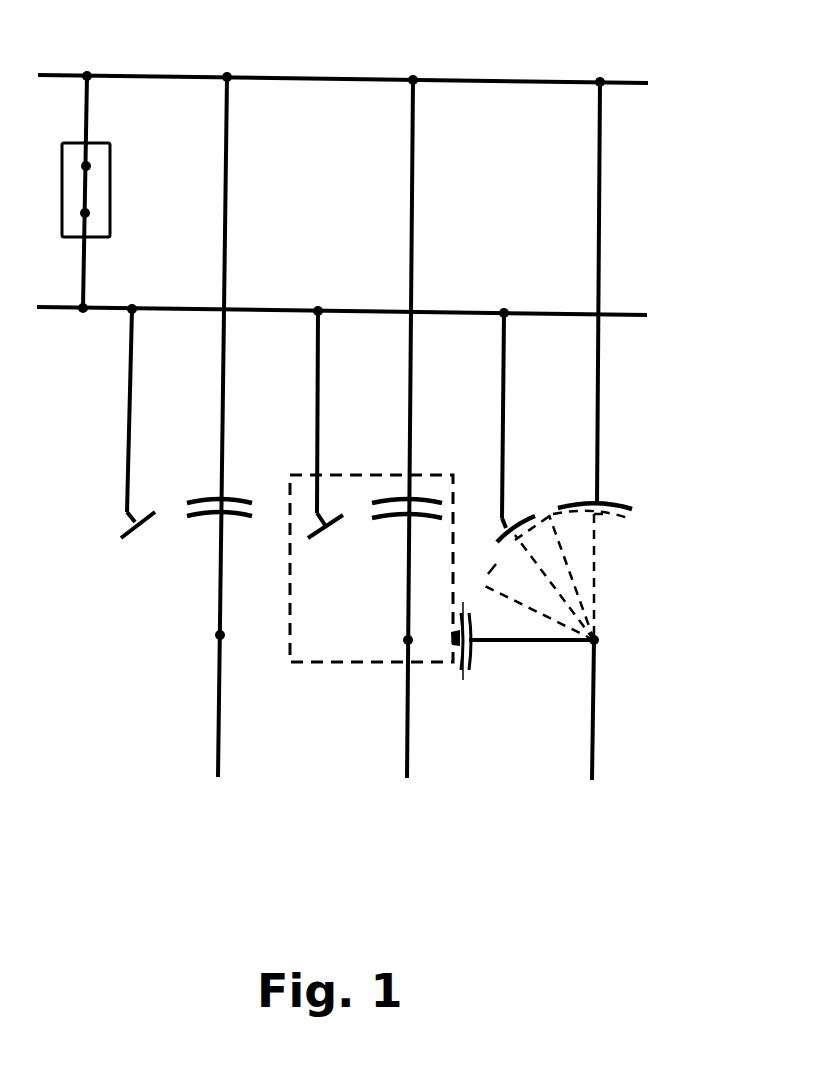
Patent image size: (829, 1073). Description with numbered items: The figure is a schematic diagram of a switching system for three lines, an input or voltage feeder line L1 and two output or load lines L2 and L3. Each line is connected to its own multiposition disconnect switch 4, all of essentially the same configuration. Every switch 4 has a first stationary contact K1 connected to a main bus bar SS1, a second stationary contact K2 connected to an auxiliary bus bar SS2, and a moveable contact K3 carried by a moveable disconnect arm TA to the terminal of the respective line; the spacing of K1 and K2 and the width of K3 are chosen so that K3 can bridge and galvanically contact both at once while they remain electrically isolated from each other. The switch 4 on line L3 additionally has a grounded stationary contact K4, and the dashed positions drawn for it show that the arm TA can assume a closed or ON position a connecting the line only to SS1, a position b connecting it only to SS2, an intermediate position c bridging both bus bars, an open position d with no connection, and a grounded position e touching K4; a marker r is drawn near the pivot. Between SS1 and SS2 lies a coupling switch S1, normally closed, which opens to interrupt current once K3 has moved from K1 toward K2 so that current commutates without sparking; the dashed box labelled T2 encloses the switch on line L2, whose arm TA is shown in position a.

The main bus bar SS1 is at (371, 90).
The auxiliary bus bar SS2 is at (370, 324).
The coupling switch S1 is at (110, 197).
The input line L1 is at (193, 434).
The output line L2 is at (380, 436).
The output line L3 is at (534, 438).
The first stationary contact K1 is at (418, 500).
The second stationary contact K2 is at (325, 438).
The moveable contact K3 is at (383, 519).
The grounded stationary contact K4 is at (461, 670).
The disconnect arm TA is at (400, 575).
The switching unit T2 is at (362, 663).
The multiposition disconnect switch 4 is at (293, 663).
The closed or ON position a is at (418, 497).
The auxiliary bus bar position b is at (545, 476).
The intermediate position c is at (554, 563).
The open or off position d is at (524, 599).
The grounded position e is at (471, 660).
The pivot marker r is at (600, 575).